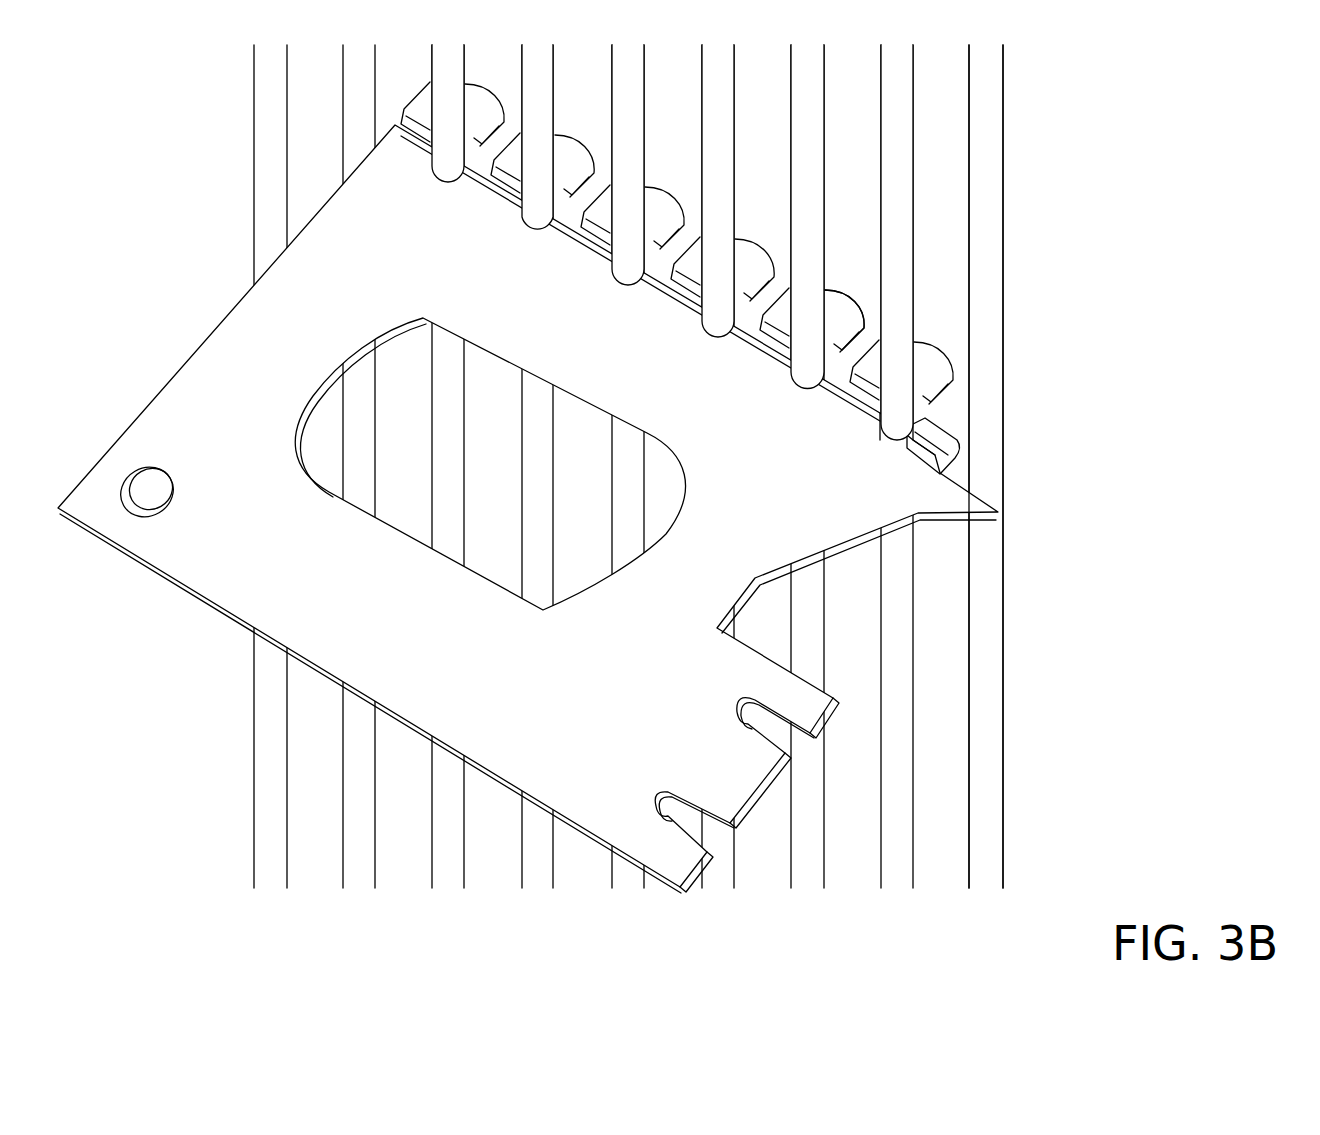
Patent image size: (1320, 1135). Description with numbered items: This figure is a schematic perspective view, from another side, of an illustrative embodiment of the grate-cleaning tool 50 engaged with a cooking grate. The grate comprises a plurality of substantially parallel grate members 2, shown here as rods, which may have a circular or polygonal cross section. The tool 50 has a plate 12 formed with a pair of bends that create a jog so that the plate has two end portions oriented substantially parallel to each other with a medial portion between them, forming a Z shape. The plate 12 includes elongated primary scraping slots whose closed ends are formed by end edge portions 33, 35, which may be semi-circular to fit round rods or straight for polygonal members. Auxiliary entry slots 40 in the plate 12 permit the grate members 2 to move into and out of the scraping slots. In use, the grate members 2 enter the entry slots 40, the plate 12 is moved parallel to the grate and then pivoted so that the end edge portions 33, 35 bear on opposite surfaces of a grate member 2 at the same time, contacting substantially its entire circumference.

The grate members 2 is at (997, 691).
The plate 12 is at (218, 565).
The end edge portion 33 is at (873, 452).
The end edge portion 35 is at (922, 387).
The auxiliary entry slot 40 is at (871, 330).
The tool 50 is at (186, 292).